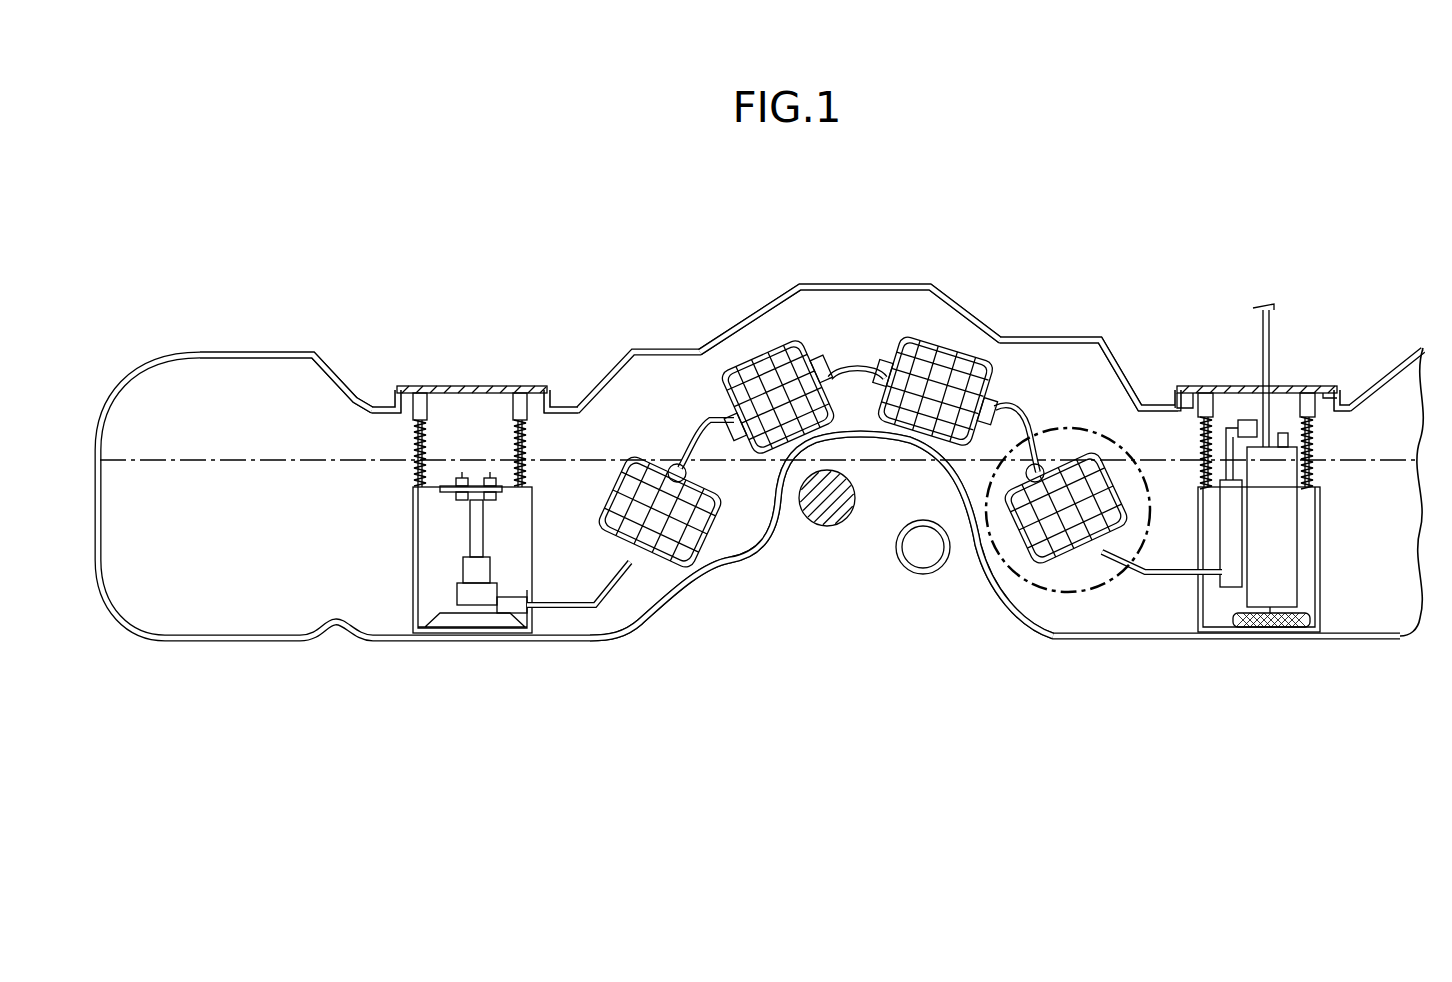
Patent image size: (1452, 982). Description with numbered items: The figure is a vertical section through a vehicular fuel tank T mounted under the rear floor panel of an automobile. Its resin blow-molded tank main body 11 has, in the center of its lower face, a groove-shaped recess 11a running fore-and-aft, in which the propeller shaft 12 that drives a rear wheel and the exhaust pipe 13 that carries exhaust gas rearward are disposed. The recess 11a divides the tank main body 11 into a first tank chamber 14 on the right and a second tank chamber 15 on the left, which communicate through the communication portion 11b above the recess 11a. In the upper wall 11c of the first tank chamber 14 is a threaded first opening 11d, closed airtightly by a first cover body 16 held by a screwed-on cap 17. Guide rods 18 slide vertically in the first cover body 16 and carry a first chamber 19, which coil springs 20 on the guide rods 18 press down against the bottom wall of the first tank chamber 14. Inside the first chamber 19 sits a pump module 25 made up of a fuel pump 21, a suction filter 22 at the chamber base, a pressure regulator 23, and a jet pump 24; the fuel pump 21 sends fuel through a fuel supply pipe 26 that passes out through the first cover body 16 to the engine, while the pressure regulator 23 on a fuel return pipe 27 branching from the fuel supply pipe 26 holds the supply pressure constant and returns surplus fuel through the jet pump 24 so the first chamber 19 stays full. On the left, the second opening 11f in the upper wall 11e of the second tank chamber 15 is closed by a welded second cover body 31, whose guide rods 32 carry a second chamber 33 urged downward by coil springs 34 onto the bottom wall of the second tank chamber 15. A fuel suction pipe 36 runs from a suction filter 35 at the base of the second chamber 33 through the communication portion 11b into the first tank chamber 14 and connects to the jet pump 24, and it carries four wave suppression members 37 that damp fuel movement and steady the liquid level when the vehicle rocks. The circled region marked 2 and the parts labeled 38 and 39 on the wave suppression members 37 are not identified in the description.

The fuel tank T is at (1098, 243).
The canister unit 2 is at (1053, 614).
The tank main body 11 is at (689, 330).
The recess 11a is at (764, 546).
The communication portion 11b is at (921, 312).
The upper wall 11c is at (1142, 380).
The first opening 11d is at (1299, 380).
The upper wall 11e is at (383, 380).
The second opening 11f is at (517, 385).
The propeller shaft 12 is at (827, 527).
The exhaust pipe 13 is at (908, 577).
The first tank chamber 14 is at (1388, 525).
The second tank chamber 15 is at (261, 541).
The first cover body 16 is at (1253, 378).
The cap 17 is at (1220, 375).
The guide rods 18 is at (1199, 466).
The first chamber 19 is at (1320, 561).
The coil springs 20 is at (1197, 428).
The fuel pump 21 is at (1288, 538).
The suction filter 22 is at (1272, 628).
The pressure regulator 23 is at (1252, 421).
The jet pump 24 is at (1229, 587).
The pump module 25 is at (1203, 590).
The fuel supply pipe 26 is at (1257, 328).
The fuel return pipe 27 is at (1235, 450).
The second cover body 31 is at (468, 388).
The guide rods 32 is at (427, 440).
The second chamber 33 is at (413, 545).
The coil springs 34 is at (413, 443).
The suction filter 35 is at (467, 622).
The fuel suction pipe 36 is at (698, 441).
The wave suppression members 37 is at (770, 340).
The canister cage 38 is at (626, 483).
The adsorbent casing 39 is at (602, 527).